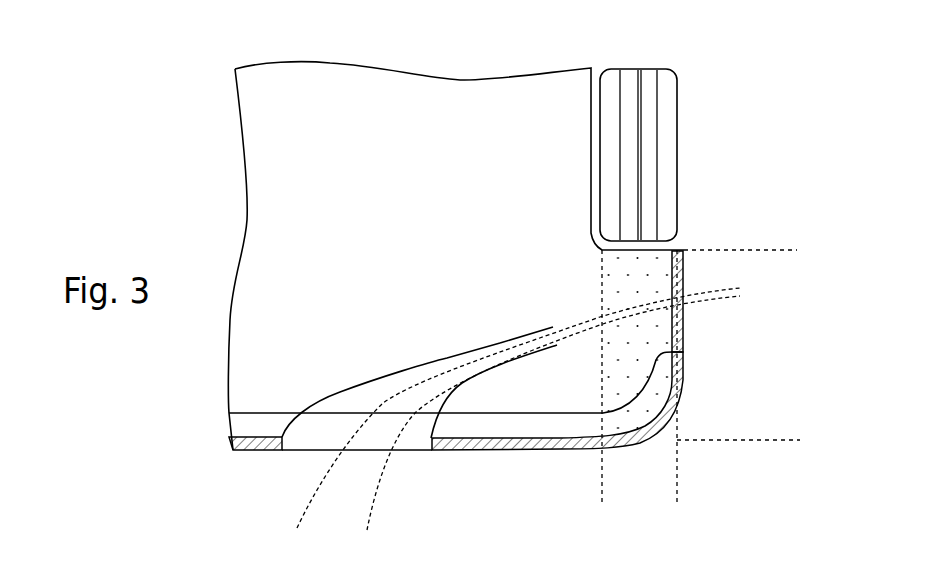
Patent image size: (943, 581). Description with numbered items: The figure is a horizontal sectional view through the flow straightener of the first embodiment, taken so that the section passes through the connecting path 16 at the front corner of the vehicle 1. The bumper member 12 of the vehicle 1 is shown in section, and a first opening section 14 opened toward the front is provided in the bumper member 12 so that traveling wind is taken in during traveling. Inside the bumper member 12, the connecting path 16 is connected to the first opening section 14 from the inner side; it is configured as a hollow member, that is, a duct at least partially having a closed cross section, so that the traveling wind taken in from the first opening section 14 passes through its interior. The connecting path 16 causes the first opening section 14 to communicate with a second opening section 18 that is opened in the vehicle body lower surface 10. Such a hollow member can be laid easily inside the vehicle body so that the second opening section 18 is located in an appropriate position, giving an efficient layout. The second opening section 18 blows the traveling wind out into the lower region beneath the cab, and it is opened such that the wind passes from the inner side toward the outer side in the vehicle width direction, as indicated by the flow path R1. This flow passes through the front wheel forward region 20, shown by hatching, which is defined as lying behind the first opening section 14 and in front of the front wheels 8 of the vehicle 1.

The vehicle 1 is at (768, 93).
The front wheel 8 is at (677, 157).
The vehicle body lower surface 10 is at (314, 134).
The bumper member 12 is at (460, 451).
The first opening section 14 is at (281, 451).
The connecting path 16 is at (447, 358).
The second opening section 18 is at (557, 321).
The front wheel forward region 20 is at (607, 275).
The flow path R1 is at (536, 403).